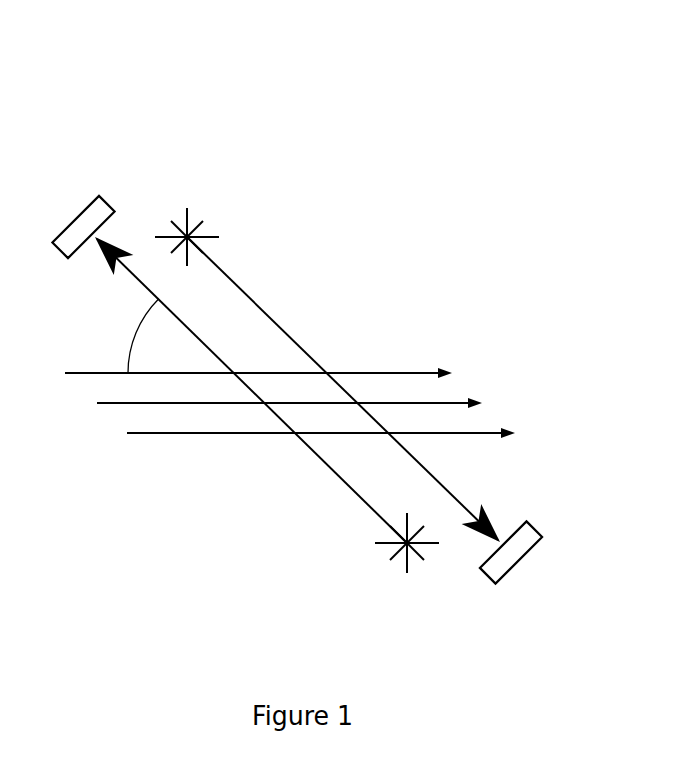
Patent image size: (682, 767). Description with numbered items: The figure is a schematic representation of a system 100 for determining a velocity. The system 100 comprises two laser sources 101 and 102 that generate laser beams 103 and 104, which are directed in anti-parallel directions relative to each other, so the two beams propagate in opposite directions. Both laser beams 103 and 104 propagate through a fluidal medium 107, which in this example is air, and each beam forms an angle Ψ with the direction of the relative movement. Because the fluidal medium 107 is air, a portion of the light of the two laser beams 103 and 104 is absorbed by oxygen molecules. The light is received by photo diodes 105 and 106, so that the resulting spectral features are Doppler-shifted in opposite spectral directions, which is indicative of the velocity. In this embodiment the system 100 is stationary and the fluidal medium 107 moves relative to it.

The system 100 is at (517, 113).
The laser source 101 is at (407, 562).
The laser source 102 is at (187, 233).
The laser beam 103 is at (306, 444).
The laser beam 104 is at (275, 318).
The photo diode 105 is at (98, 195).
The photo diode 106 is at (495, 583).
The fluidal medium 107 is at (468, 400).